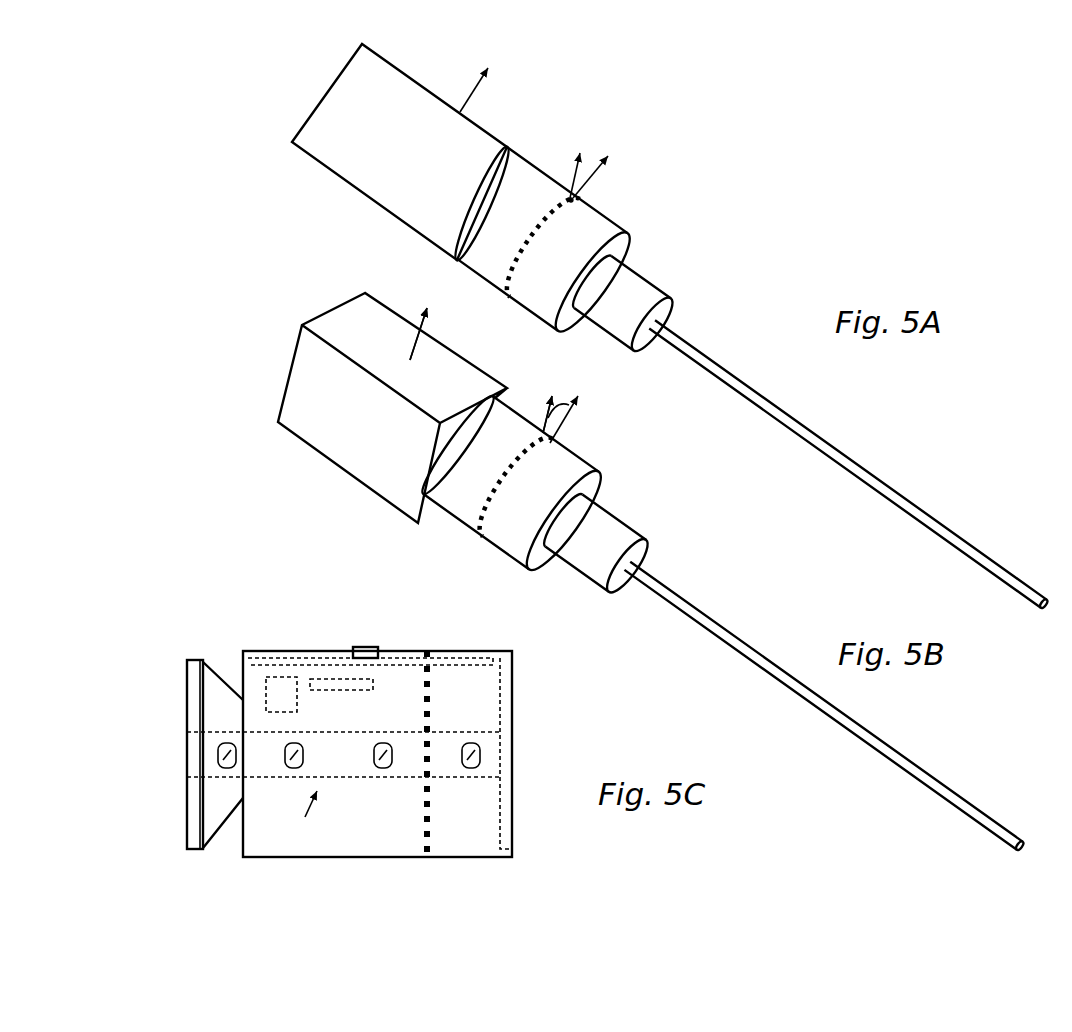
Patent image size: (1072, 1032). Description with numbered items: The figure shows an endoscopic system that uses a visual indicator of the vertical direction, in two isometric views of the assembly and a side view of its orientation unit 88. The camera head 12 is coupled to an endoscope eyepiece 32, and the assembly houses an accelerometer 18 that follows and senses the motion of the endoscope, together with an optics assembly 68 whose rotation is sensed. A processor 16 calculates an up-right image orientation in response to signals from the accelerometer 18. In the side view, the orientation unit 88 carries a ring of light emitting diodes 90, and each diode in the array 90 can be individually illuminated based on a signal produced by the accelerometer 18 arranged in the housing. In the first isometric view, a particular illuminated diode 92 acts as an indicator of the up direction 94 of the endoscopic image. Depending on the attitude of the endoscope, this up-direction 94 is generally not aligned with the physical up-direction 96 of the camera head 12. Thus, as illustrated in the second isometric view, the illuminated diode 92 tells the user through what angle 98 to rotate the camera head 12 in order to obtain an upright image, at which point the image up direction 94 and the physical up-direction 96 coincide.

In FIG. 5A, the camera head 12 is at (340, 183).
In FIG. 5B, the camera head 12 is at (292, 380).
In FIG. 5C, the processor 16 is at (338, 690).
In FIG. 5C, the accelerometer 18 is at (278, 682).
In FIG. 5C, the endoscope eyepiece 32 is at (187, 716).
In FIG. 5C, the optics assembly 68 is at (349, 793).
In FIG. 5A, the orientation unit 88 is at (492, 282).
In FIG. 5B, the orientation unit 88 is at (460, 525).
In FIG. 5C, the orientation unit 88 is at (330, 650).
In FIG. 5A, the ring of light emitting diodes 90 is at (537, 240).
In FIG. 5C, the ring of light emitting diodes 90 is at (430, 812).
In FIG. 5A, the illuminated diode 92 is at (583, 203).
In FIG. 5B, the illuminated diode 92 is at (537, 443).
In FIG. 5A, the up direction of the endoscopic image 94 is at (477, 83).
In FIG. 5B, the up direction of the endoscopic image 94 is at (418, 342).
In FIG. 5A, the physical up-direction of the camera head 96 is at (572, 180).
In FIG. 5B, the physical up-direction of the camera head 96 is at (447, 370).
In FIG. 5B, the angle 98 is at (560, 422).